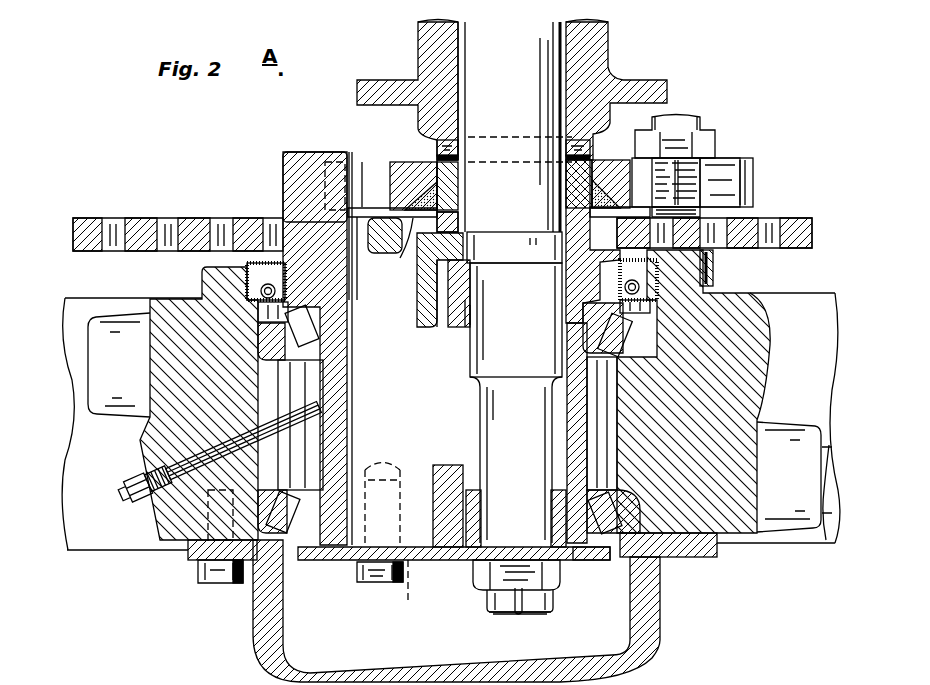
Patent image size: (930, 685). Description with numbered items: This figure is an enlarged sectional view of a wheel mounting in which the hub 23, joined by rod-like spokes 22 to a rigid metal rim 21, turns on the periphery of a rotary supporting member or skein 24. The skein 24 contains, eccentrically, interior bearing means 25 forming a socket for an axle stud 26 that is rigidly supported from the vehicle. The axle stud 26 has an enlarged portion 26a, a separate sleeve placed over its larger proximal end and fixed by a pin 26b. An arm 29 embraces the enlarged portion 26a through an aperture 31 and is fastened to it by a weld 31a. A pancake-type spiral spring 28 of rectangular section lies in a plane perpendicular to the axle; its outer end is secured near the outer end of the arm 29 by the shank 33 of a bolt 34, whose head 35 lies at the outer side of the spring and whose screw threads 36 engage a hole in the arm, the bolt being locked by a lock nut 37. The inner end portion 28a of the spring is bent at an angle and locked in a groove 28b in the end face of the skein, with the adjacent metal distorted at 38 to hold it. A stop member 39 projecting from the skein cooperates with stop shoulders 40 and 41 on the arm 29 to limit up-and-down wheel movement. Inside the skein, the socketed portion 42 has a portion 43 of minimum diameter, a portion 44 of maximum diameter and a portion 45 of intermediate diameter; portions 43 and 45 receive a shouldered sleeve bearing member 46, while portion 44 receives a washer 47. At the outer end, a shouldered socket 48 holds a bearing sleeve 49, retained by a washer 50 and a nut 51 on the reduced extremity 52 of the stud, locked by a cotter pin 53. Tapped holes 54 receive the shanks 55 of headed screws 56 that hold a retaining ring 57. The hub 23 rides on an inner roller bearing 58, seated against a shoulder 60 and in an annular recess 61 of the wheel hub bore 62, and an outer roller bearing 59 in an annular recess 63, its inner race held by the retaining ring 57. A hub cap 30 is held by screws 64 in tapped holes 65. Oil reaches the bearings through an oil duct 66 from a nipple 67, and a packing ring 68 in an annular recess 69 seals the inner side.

The rigid metal rim 21 is at (787, 535).
The rod-like spokes 22 is at (825, 540).
The hub 23 is at (760, 380).
The skein 24 is at (340, 397).
The interior bearing means 25 is at (466, 497).
The axle stud 26 is at (483, 364).
The enlarged portion 26a is at (590, 60).
The pin 26b is at (462, 134).
The spiral spring 28 is at (90, 213).
The inner end portion of the spring 28a is at (388, 249).
The groove 28b is at (343, 223).
The arm 29 is at (730, 163).
The hub cap 30 is at (268, 657).
The aperture 31 is at (468, 172).
The weld 31a is at (440, 202).
The shank 33 is at (700, 211).
The bolt 34 is at (734, 264).
The head 35 is at (730, 279).
The screw threads 36 is at (700, 187).
The lock nut 37 is at (708, 145).
The distorted metal 38 is at (372, 226).
The stop member 39 is at (293, 156).
The stop shoulder 40 is at (717, 167).
The stop shoulder 41 is at (353, 167).
The socketed portion 42 is at (458, 312).
The portion of minimum diameter 43 is at (468, 293).
The portion of maximum diameter 44 is at (452, 282).
The portion of intermediate diameter 45 is at (468, 251).
The shouldered sleeve bearing member 46 is at (425, 328).
The washer 47 is at (468, 222).
The shouldered socket 48 is at (482, 503).
The bearing sleeve 49 is at (462, 548).
The washer 50 is at (478, 561).
The nut 51 is at (484, 590).
The reduced extremity 52 is at (503, 614).
The cotter pin 53 is at (518, 612).
The tapped holes 54 is at (408, 600).
The shanks 55 is at (348, 563).
The headed screws 56 is at (386, 582).
The retaining ring 57 is at (589, 560).
The inner roller bearing 58 is at (640, 330).
The outer roller bearing 59 is at (648, 520).
The shoulder 60 is at (660, 303).
The annular recess 61 is at (645, 345).
The wheel hub bore 62 is at (318, 420).
The annular recess 63 is at (188, 540).
The screws 64 is at (220, 584).
The tapped holes 65 is at (263, 503).
The oil duct 66 is at (165, 448).
The nipple 67 is at (122, 495).
The packing ring 68 is at (262, 266).
The annular recess 69 is at (250, 268).